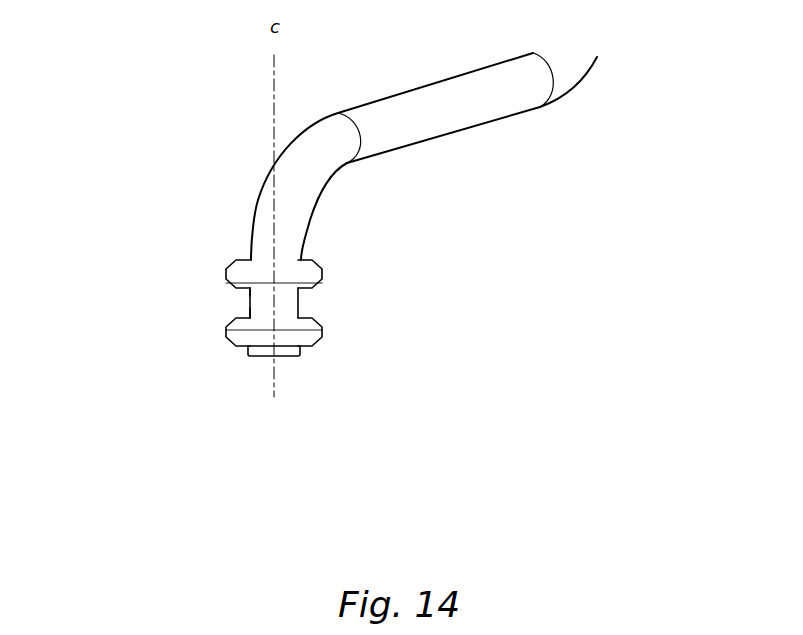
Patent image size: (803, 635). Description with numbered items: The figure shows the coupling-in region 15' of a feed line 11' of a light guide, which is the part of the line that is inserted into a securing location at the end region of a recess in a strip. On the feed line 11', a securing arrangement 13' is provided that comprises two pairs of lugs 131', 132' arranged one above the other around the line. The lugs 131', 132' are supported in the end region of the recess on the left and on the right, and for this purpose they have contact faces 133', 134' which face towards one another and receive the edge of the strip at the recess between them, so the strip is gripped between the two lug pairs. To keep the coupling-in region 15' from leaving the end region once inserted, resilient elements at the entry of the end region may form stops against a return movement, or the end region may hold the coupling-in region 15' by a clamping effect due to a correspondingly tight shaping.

The feed line 11' is at (503, 156).
The securing arrangement 13' is at (239, 268).
The coupling-in region 15' is at (239, 302).
The lug 131' is at (190, 385).
The lug 132' is at (135, 224).
The contact face 133' is at (136, 352).
The contact face 134' is at (171, 249).